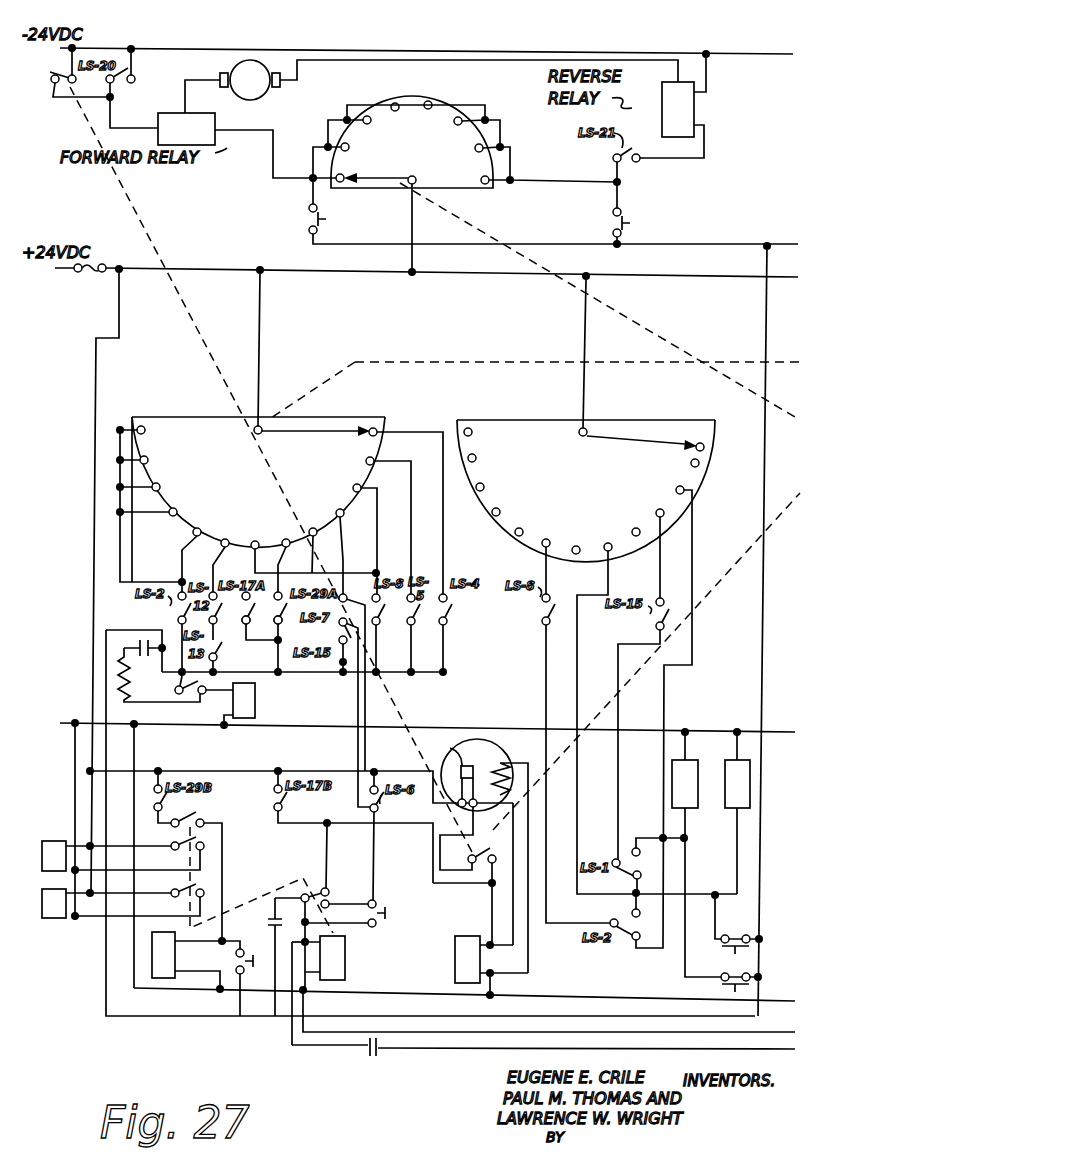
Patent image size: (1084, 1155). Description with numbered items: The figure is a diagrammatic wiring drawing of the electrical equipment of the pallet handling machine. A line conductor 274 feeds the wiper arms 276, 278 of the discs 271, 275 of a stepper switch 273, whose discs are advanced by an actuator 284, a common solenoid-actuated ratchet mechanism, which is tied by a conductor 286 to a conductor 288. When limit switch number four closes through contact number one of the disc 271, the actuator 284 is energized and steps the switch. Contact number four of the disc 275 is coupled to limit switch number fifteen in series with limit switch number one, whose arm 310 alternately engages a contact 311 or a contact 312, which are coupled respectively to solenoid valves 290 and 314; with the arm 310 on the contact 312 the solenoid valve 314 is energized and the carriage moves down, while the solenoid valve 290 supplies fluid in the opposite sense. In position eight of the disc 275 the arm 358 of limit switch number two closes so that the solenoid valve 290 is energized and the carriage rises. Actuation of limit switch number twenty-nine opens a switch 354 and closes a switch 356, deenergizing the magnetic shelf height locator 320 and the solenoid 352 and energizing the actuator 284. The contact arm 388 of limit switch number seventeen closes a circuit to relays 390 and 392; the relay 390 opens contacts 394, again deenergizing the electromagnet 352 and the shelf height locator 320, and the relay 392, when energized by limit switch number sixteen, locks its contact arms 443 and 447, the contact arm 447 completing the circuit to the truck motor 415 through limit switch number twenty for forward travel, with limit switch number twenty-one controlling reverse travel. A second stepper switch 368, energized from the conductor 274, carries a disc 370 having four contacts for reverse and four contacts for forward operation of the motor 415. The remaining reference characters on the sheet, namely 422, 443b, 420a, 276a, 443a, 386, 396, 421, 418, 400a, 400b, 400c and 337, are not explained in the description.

The contact arm 447 is at (77, 85).
The motor 415 is at (222, 73).
The disc 370 is at (416, 97).
The wiper 422 is at (407, 188).
The stepper switch 368 is at (455, 187).
The mechanical linkage (dashed) 443b is at (200, 218).
The stepper switch 273 is at (724, 244).
The line conductor 274 is at (376, 276).
The mechanical linkage (dashed) 420a is at (678, 354).
The mechanical linkage (dashed) 276a is at (512, 362).
The mechanical linkage (dashed) 443a is at (730, 562).
The wiper arm 276 is at (324, 418).
The disc 271 is at (248, 412).
The wiper arm 278 is at (697, 422).
The disc 275 is at (586, 424).
The switch 356 is at (280, 626).
The limit switch contact 386 is at (268, 624).
The conductor 286 is at (224, 718).
The actuator 284 is at (254, 690).
The conductor 288 is at (294, 730).
The switch 354 is at (166, 808).
The contacts 394 is at (196, 822).
The solenoid 352 is at (62, 846).
The magnetic shelf height locator 320 is at (64, 912).
The relay 396 is at (175, 963).
The contact arm 388 is at (286, 812).
The switch 421 is at (317, 830).
The relay 390 is at (340, 958).
The photocell 418 is at (452, 753).
The contact arm 443 is at (472, 844).
The relay 392 is at (456, 950).
The line 400a is at (590, 998).
The line 400b is at (619, 1034).
The line 400c is at (675, 1058).
The capacitor 337 is at (374, 1056).
The contact 311 is at (655, 828).
The arm 310 is at (612, 856).
The contact 312 is at (632, 878).
The arm 358 is at (618, 918).
The solenoid valve 290 is at (686, 770).
The solenoid valve 314 is at (736, 798).